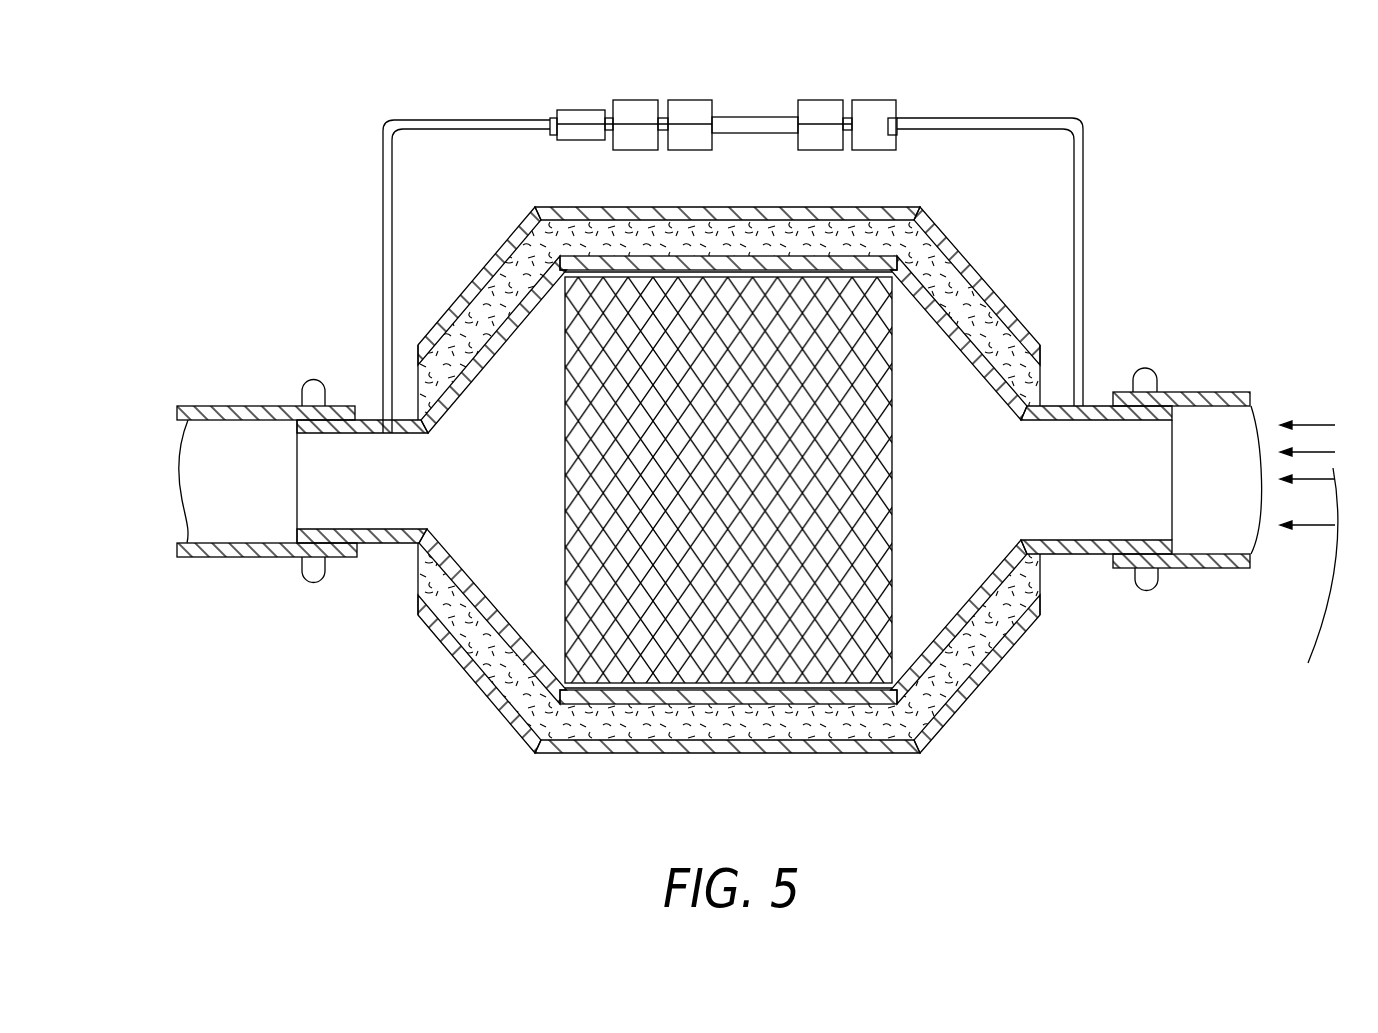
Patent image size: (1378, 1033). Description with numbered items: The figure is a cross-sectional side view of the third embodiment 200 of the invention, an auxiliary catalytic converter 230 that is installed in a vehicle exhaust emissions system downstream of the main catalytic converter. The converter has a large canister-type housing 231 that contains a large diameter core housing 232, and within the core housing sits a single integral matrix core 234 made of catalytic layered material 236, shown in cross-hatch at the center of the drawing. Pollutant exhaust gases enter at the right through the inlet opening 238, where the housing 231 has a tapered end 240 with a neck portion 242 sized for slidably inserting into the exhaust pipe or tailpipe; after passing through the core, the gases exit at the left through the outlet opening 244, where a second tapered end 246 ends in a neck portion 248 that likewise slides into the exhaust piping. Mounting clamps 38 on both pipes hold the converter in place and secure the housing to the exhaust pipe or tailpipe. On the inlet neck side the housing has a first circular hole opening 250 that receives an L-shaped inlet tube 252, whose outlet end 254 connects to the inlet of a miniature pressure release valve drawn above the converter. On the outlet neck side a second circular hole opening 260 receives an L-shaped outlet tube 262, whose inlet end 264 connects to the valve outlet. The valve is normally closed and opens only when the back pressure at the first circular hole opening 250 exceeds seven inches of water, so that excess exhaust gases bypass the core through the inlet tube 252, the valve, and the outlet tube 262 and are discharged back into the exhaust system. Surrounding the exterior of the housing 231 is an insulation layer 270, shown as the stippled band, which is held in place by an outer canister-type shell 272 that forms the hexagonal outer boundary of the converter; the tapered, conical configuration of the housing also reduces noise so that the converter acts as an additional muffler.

The third embodiment 200 is at (313, 338).
The auxiliary catalytic converter 230 is at (458, 667).
The canister-type housing 231 is at (540, 216).
The core housing 232 is at (603, 274).
The matrix core 234 is at (880, 527).
The catalytic layered material 236 is at (855, 413).
The inlet opening 238 is at (1174, 462).
The tapered end 240 is at (937, 630).
The neck portion 242 is at (1061, 542).
The outlet opening 244 is at (293, 460).
The tapered end 246 is at (462, 393).
The neck portion 248 is at (316, 527).
The first circular hole opening 250 is at (1079, 421).
The L-shaped inlet tube 252 is at (1084, 133).
The outlet end 254 is at (897, 119).
The second circular hole opening 260 is at (393, 433).
The L-shaped outlet tube 262 is at (383, 131).
The inlet end 264 is at (549, 117).
The insulation layer 270 is at (880, 237).
The outer canister-type shell 272 is at (503, 243).
The mounting clamps 38 is at (312, 385).